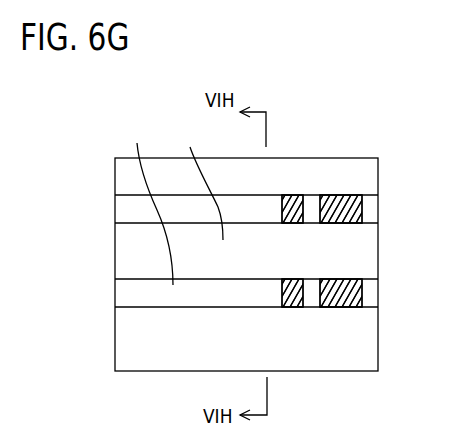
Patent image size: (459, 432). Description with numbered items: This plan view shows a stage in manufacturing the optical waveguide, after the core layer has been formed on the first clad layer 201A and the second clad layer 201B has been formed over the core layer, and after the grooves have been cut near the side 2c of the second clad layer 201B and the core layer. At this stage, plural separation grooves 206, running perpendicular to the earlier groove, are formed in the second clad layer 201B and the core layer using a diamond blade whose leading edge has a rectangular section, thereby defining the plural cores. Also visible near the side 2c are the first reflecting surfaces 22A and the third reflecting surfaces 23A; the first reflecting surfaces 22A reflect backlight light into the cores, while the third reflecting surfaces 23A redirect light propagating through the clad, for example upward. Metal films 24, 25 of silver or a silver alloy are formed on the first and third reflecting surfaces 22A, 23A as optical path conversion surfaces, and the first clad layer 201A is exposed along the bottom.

The side 2c is at (378, 355).
The separation grooves 206 is at (352, 195).
The third reflecting surfaces 23A is at (293, 194).
The metal film 25 is at (302, 195).
The first reflecting surfaces 22A is at (342, 193).
The metal film 24 is at (344, 211).
The first clad layer 201A is at (172, 166).
The second clad layer 201B is at (125, 208).